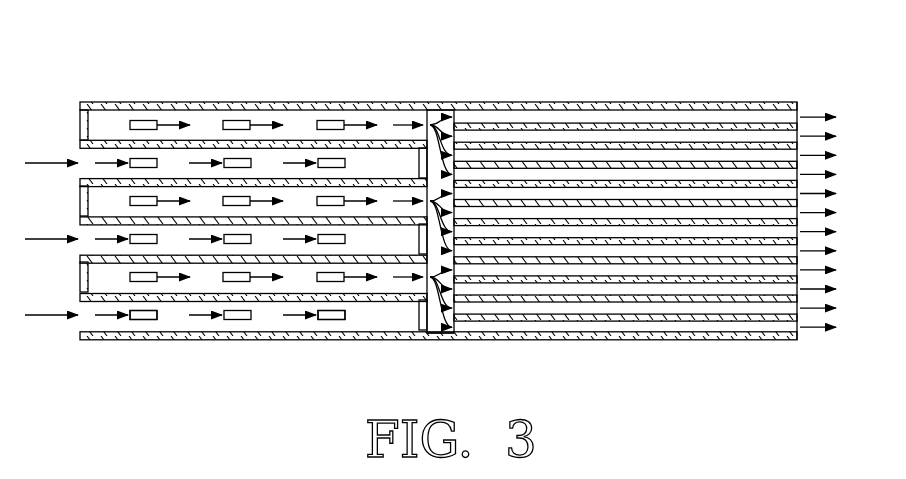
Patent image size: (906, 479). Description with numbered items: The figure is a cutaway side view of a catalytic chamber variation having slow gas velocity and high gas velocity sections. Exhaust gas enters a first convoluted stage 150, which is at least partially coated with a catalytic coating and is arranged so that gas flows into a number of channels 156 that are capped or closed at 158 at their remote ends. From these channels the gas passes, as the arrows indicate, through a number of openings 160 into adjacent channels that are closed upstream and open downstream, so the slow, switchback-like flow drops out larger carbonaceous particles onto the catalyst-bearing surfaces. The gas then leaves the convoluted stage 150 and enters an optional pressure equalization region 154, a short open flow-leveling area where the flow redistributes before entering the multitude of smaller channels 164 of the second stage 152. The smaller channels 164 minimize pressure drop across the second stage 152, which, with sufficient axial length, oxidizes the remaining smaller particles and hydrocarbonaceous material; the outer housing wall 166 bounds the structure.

The first convoluted stage 150 is at (427, 81).
The second stage 152 is at (797, 81).
The pressure equalization region 154 is at (435, 107).
The channels 156 is at (93, 172).
The closed remote end 158 is at (433, 335).
The openings 160 is at (143, 322).
The smaller channels 164 is at (673, 325).
The housing wall 166 is at (80, 129).